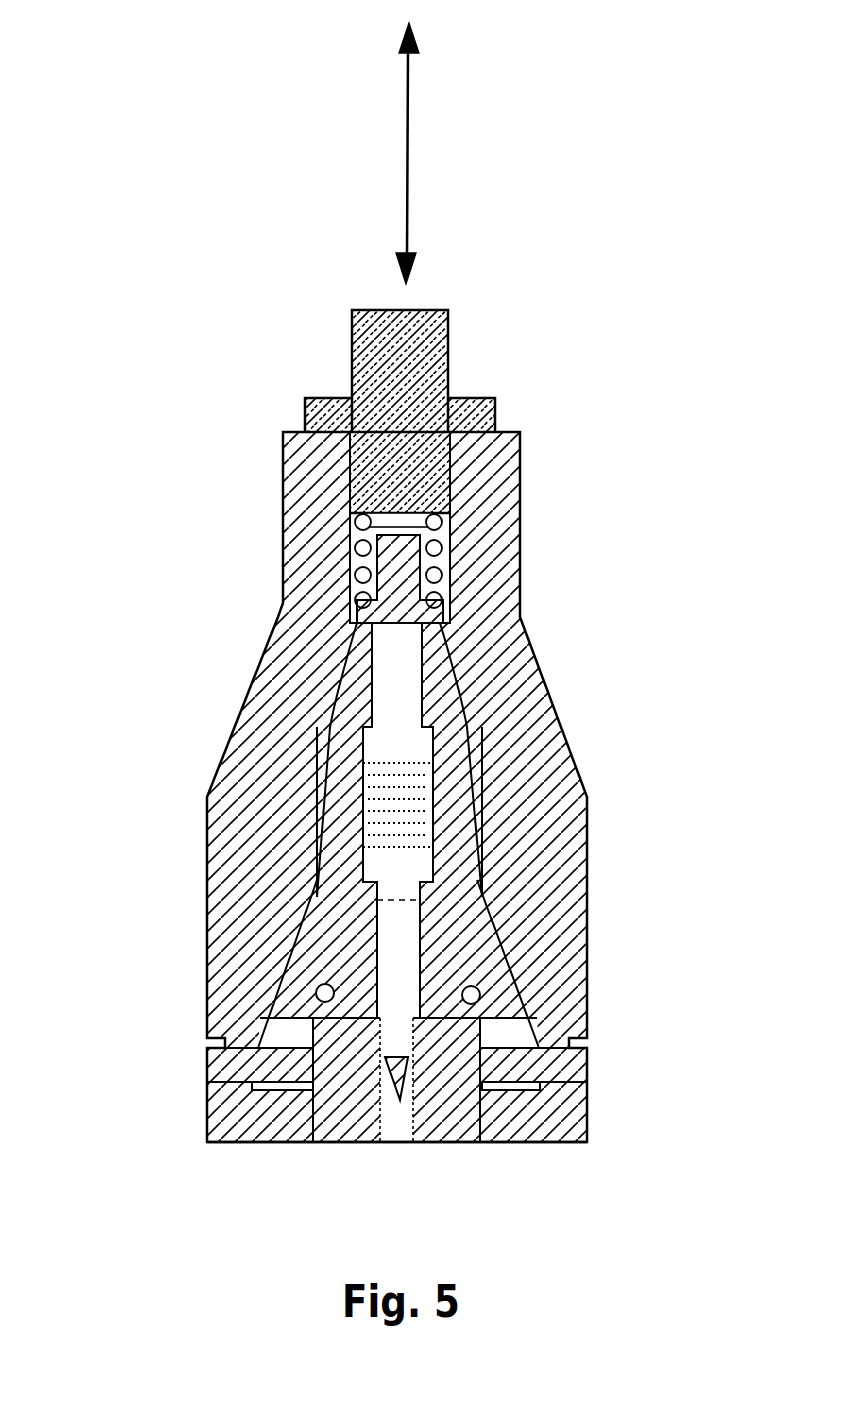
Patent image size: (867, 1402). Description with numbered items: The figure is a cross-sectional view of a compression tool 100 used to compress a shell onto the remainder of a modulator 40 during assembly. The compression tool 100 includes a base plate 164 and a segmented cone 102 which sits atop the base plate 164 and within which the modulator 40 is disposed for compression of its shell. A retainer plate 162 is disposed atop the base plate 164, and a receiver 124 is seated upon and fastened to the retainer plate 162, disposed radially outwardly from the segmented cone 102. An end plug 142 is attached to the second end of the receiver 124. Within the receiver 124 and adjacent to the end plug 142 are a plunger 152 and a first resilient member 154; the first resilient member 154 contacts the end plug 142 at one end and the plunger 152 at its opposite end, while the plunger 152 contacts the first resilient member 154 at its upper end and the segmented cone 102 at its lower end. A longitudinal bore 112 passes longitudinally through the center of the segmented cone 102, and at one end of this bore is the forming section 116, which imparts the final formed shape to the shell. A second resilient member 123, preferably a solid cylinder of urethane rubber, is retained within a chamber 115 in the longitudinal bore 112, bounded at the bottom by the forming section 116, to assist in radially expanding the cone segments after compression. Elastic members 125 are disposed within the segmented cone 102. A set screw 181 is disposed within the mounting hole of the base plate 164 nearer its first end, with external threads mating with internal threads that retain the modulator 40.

The compression tool 100 is at (222, 704).
The end plug 142 is at (480, 400).
The segmented cone 102 is at (450, 767).
The receiver 124 is at (282, 497).
The first resilient member 154 is at (437, 540).
The plunger 152 is at (445, 612).
The longitudinal bore 112 is at (395, 657).
The chamber 115 is at (383, 748).
The second resilient member 123 is at (420, 833).
The modulator 40 is at (385, 958).
The forming section 116 is at (440, 950).
The elastic members 125 is at (477, 995).
The retainer plate 162 is at (560, 1075).
The base plate 164 is at (575, 1128).
The set screw 181 is at (397, 1100).